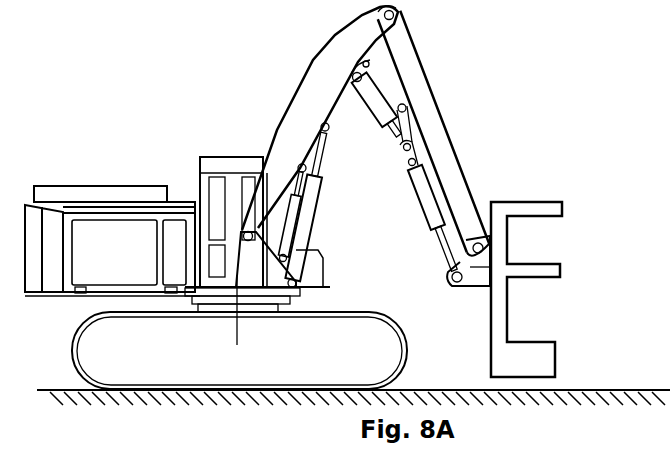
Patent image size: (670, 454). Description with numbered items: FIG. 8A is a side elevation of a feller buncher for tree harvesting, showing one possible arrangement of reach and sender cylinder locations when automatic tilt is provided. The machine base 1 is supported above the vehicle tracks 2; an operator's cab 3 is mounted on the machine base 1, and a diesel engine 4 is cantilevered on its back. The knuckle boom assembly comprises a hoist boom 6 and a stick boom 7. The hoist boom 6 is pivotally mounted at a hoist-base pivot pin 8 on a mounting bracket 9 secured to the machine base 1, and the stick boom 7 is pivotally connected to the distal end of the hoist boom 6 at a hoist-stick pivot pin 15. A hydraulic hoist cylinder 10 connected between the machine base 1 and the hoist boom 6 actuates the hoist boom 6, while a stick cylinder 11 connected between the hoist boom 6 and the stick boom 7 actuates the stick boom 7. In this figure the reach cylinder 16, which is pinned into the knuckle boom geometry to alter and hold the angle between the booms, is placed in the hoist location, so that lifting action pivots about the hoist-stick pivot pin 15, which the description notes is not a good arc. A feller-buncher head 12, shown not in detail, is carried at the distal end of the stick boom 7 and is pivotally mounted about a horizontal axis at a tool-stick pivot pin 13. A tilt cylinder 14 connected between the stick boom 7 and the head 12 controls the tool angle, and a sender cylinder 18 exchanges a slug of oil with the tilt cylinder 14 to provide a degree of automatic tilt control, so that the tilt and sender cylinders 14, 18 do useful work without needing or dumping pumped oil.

The machine base 1 is at (82, 290).
The vehicle tracks 2 is at (72, 350).
The operator's cab 3 is at (248, 157).
The diesel engine 4 is at (95, 242).
The hoist boom 6 is at (305, 98).
The stick boom 7 is at (437, 117).
The hoist-base pivot pin 8 is at (252, 230).
The mounting bracket 9 is at (227, 277).
The hydraulic hoist cylinder 10 is at (310, 233).
The stick cylinder 11 is at (390, 138).
The feller-buncher head 12 is at (582, 327).
The tool-stick pivot pin 13 is at (473, 208).
The tilt cylinder 14 is at (425, 167).
The hoist-stick pivot pin 15 is at (383, 8).
The reach cylinder 16 is at (315, 192).
The sender cylinder 18 is at (393, 72).